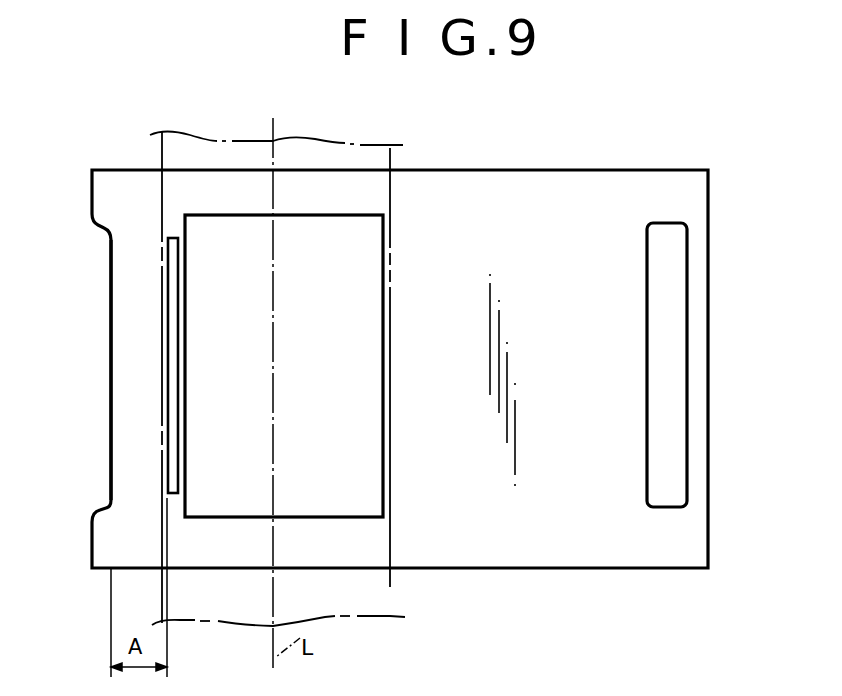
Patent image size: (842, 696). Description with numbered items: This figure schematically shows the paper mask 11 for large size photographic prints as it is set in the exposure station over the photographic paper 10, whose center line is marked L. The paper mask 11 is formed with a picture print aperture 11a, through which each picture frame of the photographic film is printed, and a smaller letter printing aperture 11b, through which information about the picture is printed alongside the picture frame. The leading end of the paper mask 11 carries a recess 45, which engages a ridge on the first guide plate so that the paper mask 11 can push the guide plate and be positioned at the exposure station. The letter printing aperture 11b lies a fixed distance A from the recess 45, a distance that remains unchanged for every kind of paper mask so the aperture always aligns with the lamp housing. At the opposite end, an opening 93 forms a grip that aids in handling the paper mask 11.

The photographic paper 10 is at (390, 600).
The paper mask 11 is at (423, 170).
The picture print aperture 11a is at (392, 378).
The letter printing aperture 11b is at (170, 380).
The recess 45 is at (111, 335).
The opening 93 is at (689, 391).